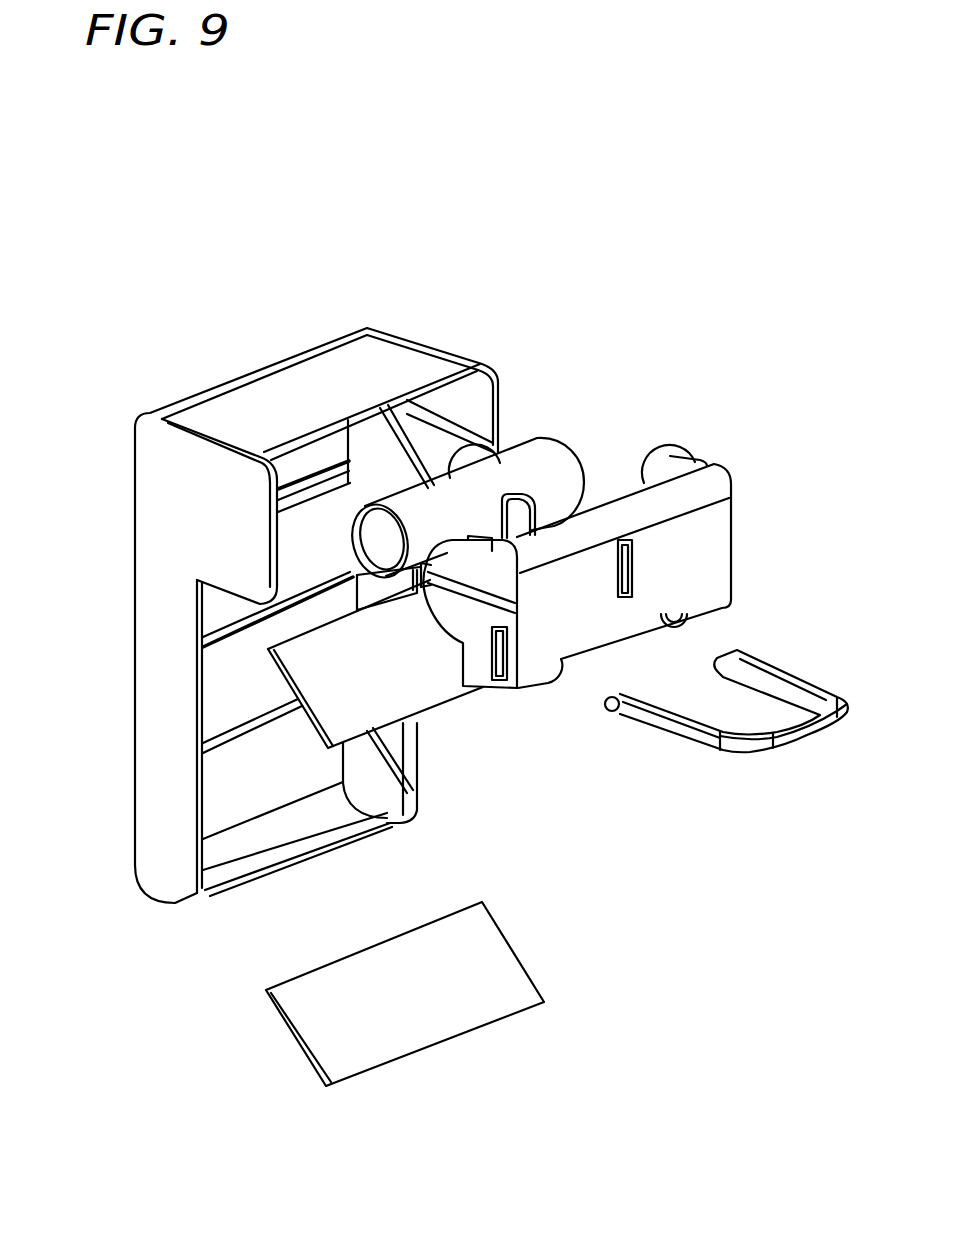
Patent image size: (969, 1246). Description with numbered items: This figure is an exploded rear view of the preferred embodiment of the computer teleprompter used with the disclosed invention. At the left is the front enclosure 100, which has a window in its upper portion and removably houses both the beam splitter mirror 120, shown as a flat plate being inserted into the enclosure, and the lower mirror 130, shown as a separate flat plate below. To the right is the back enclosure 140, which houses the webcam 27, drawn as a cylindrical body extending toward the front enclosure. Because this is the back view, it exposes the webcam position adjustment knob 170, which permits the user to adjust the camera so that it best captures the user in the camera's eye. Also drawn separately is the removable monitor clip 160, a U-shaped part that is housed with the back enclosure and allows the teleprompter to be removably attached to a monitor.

The front enclosure 100 is at (170, 572).
The beam splitter mirror 120 is at (410, 688).
The webcam 27 is at (543, 473).
The webcam position adjustment knob 170 is at (553, 498).
The back enclosure 140 is at (697, 573).
The removable monitor clip 160 is at (765, 752).
The lower mirror 130 is at (500, 980).